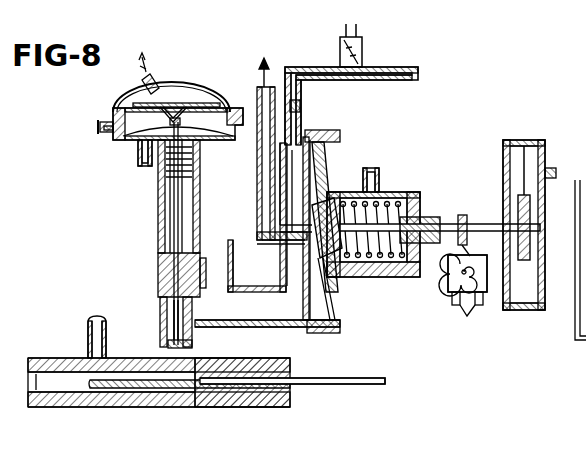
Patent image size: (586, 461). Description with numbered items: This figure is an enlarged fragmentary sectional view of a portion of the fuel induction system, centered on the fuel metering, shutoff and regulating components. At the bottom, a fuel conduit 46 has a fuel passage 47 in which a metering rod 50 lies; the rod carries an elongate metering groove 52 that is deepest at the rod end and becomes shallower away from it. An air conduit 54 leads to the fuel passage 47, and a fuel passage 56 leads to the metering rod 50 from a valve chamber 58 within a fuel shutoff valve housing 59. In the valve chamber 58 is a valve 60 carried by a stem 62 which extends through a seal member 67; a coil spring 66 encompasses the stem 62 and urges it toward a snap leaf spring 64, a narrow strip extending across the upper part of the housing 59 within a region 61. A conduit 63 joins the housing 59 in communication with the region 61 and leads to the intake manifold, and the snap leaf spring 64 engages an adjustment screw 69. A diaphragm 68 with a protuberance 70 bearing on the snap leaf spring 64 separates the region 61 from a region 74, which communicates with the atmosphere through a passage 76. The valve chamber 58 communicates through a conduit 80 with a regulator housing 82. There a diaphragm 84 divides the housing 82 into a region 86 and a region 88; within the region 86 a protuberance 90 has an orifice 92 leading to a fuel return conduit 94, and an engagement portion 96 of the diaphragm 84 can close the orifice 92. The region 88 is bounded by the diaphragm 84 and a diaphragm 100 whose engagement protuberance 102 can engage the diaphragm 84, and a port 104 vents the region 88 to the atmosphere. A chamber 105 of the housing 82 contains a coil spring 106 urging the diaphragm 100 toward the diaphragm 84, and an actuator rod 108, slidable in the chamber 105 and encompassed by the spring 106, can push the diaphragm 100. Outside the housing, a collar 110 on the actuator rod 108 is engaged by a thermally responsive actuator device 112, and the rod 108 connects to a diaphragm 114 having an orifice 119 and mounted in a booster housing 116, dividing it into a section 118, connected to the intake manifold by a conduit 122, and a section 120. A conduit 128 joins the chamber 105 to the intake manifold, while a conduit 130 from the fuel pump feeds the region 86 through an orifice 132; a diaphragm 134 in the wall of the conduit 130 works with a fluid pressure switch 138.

The fuel conduit 46 is at (66, 364).
The fuel passage 47 is at (44, 392).
The metering rod 50 is at (345, 386).
The metering groove 52 is at (92, 392).
The air conduit 54 is at (88, 334).
The fuel passage 56 is at (200, 372).
The valve chamber 58 is at (170, 352).
The fuel shutoff valve housing 59 is at (152, 193).
The valve 60 is at (170, 340).
The region 61 is at (112, 134).
The stem 62 is at (172, 312).
The conduit 63 is at (138, 156).
The snap leaf spring 64 is at (234, 108).
The coil spring 66 is at (172, 240).
The seal member 67 is at (160, 272).
The diaphragm 68 is at (200, 95).
The adjustment screw 69 is at (104, 121).
The protuberance 70 is at (150, 92).
The region 74 is at (176, 96).
The passage 76 is at (152, 72).
The conduit 80 is at (250, 327).
The regulator housing 82 is at (342, 326).
The diaphragm 84 is at (302, 306).
The region 86 is at (286, 168).
The region 88 is at (328, 160).
The protuberance 90 is at (262, 232).
The orifice 92 is at (257, 238).
The fuel return conduit 94 is at (257, 192).
The engagement portion 96 is at (300, 264).
The diaphragm 100 is at (326, 326).
The engagement protuberance 102 is at (300, 244).
The port 104 is at (322, 130).
The chamber 105 is at (416, 217).
The coil spring 106 is at (381, 185).
The actuator rod 108 is at (448, 214).
The collar 110 is at (463, 215).
The thermally responsive actuator device 112 is at (447, 284).
The diaphragm 114 is at (512, 170).
The booster housing 116 is at (518, 140).
The section 118 is at (526, 142).
The orifice 119 is at (531, 256).
The section 120 is at (514, 310).
The conduit 122 is at (551, 168).
The conduit 128 is at (367, 170).
The conduit 130 is at (318, 66).
The orifice 132 is at (302, 106).
The diaphragm 134 is at (362, 52).
The fluid pressure switch 138 is at (342, 42).